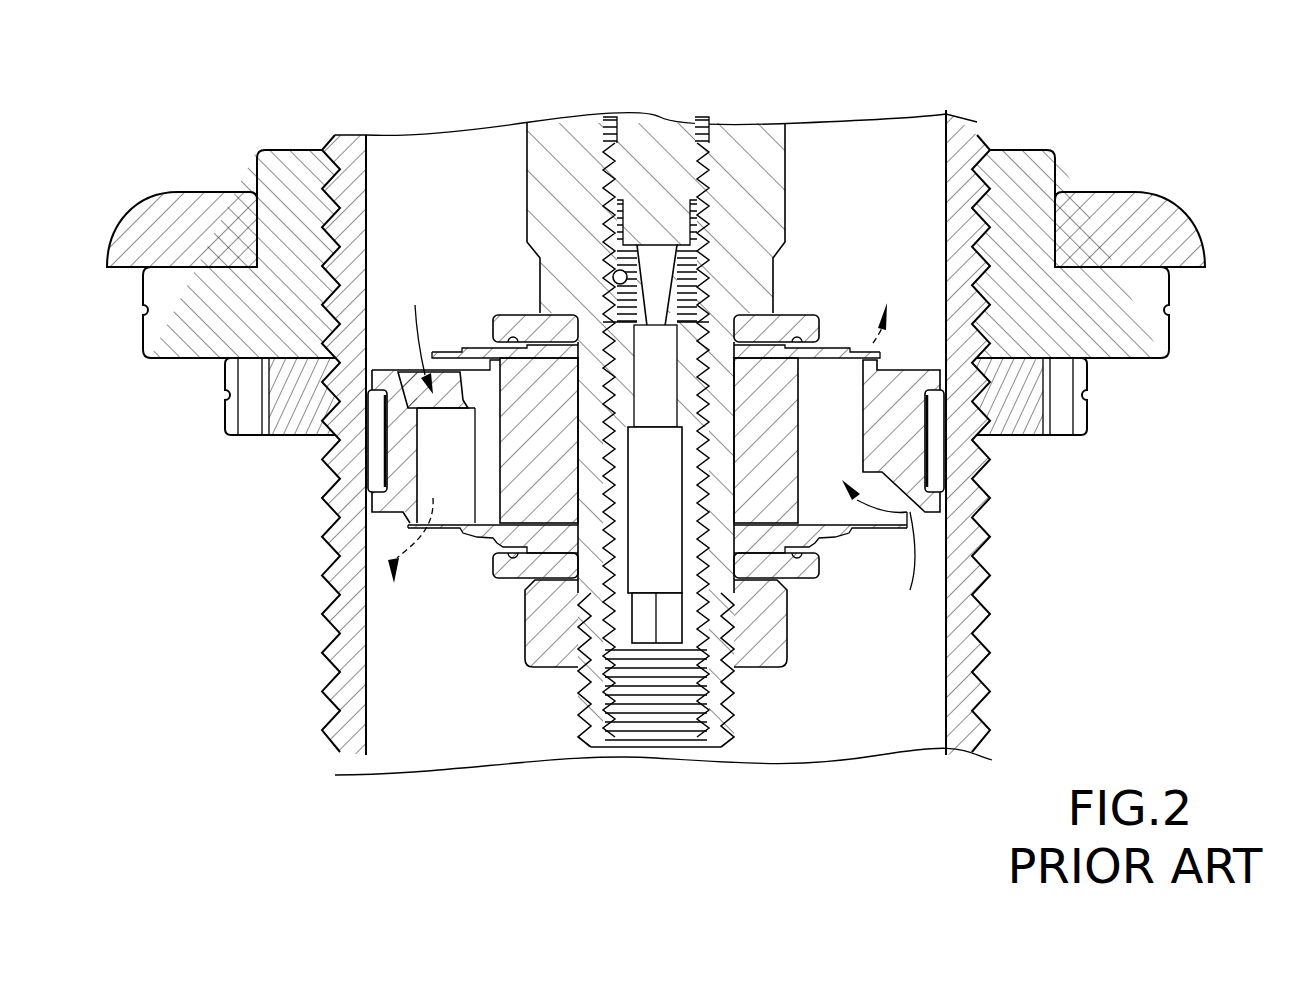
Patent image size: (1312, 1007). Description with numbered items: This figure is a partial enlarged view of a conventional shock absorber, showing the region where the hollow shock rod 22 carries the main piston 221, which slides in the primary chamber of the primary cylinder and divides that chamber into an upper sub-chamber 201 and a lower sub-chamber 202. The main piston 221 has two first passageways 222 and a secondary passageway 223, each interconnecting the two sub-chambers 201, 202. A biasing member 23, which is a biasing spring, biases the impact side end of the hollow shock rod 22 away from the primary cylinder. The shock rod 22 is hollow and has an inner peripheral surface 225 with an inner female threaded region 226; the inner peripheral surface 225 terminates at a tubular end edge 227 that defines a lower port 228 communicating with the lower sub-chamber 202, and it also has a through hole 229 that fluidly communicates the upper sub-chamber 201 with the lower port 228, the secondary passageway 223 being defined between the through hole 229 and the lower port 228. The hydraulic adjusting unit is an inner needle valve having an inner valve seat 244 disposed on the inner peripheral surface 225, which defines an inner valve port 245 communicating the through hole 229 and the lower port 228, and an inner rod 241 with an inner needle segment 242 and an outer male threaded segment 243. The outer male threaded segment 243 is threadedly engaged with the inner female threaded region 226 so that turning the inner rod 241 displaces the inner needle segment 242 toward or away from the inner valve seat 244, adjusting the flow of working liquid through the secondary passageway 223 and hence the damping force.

The upper sub-chamber 201 is at (917, 137).
The lower sub-chamber 202 is at (912, 675).
The hollow shock rod 22 is at (745, 140).
The main piston 221 is at (900, 442).
The first passageways 222 is at (433, 470).
The secondary passageway 223 is at (658, 752).
The inner peripheral surface 225 is at (690, 740).
The inner female threaded region 226 is at (628, 730).
The tubular end edge 227 is at (715, 750).
The lower port 228 is at (613, 750).
The through hole 229 is at (607, 268).
The biasing member 23 is at (1128, 192).
The inner rod 241 is at (665, 137).
The inner needle segment 242 is at (603, 300).
The outer male threaded segment 243 is at (706, 168).
The inner valve seat 244 is at (693, 343).
The inner valve port 245 is at (780, 245).